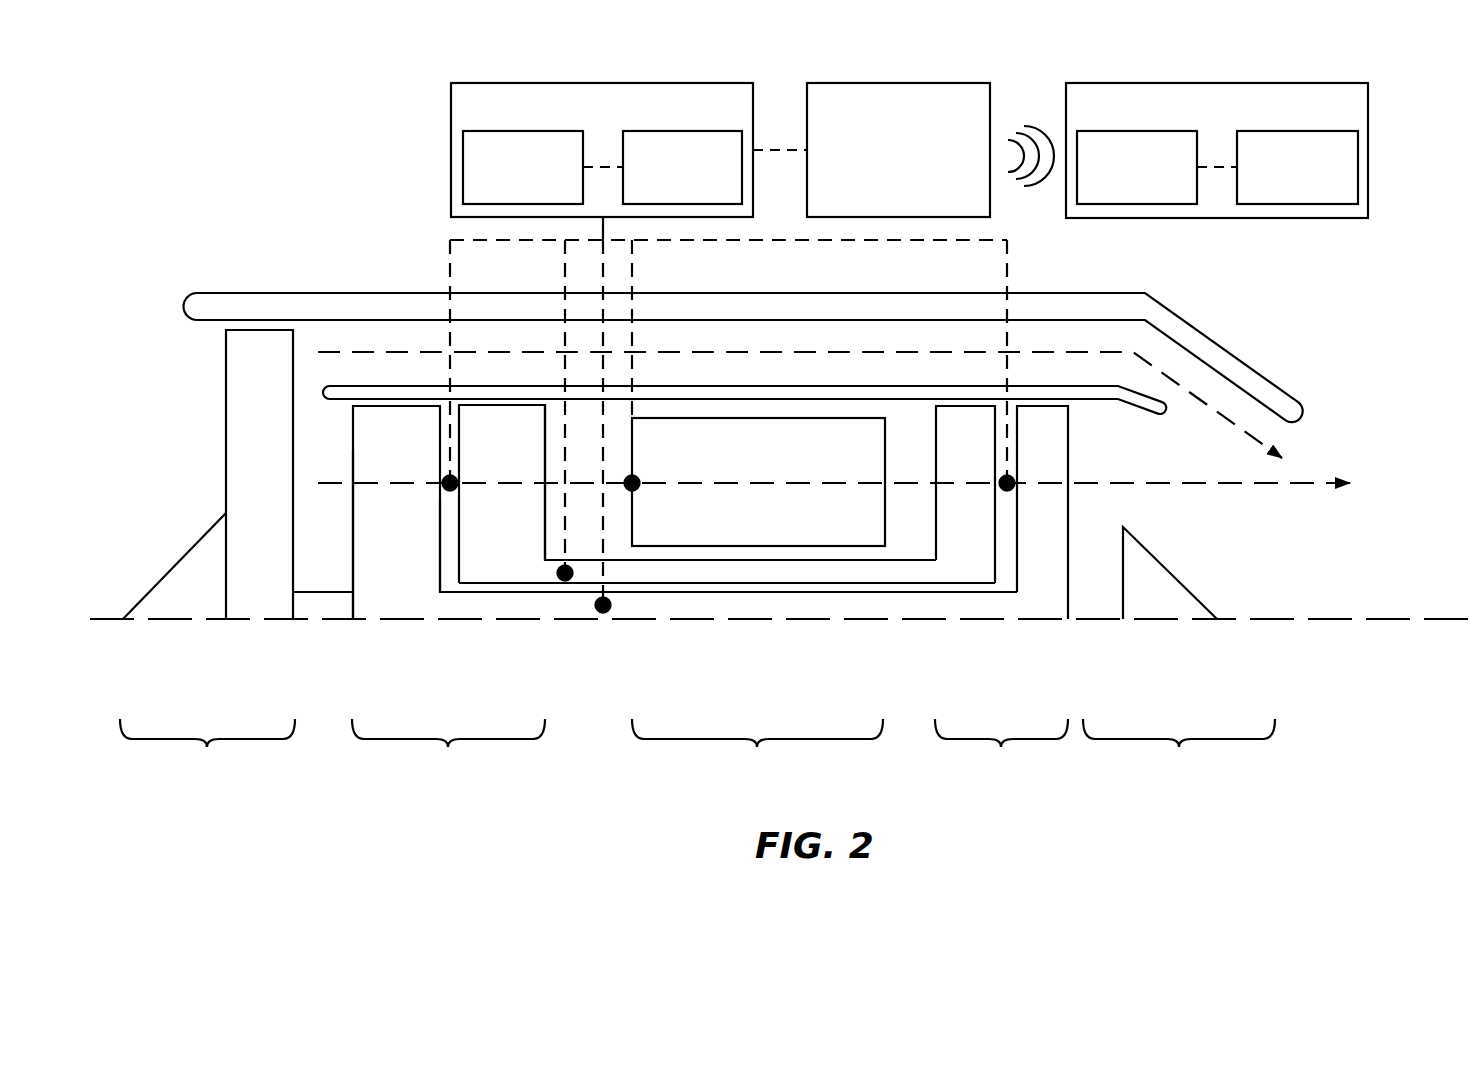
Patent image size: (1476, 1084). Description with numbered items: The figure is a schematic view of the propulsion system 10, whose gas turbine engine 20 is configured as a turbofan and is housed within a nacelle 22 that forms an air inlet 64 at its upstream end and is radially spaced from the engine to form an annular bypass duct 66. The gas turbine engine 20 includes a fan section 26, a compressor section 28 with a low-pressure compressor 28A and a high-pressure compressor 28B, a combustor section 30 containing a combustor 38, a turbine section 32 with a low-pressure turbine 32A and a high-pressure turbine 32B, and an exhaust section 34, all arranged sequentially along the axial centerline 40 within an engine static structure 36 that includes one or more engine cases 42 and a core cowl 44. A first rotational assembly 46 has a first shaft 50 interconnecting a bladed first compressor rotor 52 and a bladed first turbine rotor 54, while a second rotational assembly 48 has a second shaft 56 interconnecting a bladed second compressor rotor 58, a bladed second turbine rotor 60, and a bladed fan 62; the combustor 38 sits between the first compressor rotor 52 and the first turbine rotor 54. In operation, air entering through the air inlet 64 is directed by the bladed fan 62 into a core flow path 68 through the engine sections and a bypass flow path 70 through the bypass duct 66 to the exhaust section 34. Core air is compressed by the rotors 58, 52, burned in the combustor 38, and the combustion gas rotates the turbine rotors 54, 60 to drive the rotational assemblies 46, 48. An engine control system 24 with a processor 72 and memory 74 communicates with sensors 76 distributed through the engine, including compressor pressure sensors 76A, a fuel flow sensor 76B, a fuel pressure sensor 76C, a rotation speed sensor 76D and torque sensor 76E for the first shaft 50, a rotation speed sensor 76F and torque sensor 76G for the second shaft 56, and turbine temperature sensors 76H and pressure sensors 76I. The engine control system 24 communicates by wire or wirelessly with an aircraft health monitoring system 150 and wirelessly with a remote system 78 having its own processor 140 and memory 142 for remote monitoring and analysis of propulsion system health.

The propulsion system 10 is at (1308, 352).
The gas turbine engine 20 is at (182, 346).
The nacelle 22 is at (336, 272).
The engine control system 24 is at (451, 108).
The fan section 26 is at (207, 752).
The compressor section 28 is at (448, 752).
The low-pressure compressor 28A is at (392, 630).
The high-pressure compressor 28B is at (498, 563).
The combustor section 30 is at (757, 752).
The turbine section 32 is at (1001, 752).
The low-pressure turbine 32A is at (1038, 628).
The high-pressure turbine 32B is at (968, 563).
The exhaust section 34 is at (1179, 752).
The engine static structure 36 is at (1033, 372).
The combustor 38 is at (712, 538).
The axial centerline 40 is at (1444, 630).
The engine cases 42 is at (513, 397).
The core cowl 44 is at (553, 386).
The first rotational assembly 46 is at (450, 444).
The second rotational assembly 48 is at (348, 555).
The first shaft 50 is at (783, 572).
The bladed first compressor rotor 52 is at (508, 543).
The bladed first turbine rotor 54 is at (946, 510).
The second shaft 56 is at (452, 605).
The bladed second compressor rotor 58 is at (382, 510).
The bladed second turbine rotor 60 is at (1038, 510).
The bladed fan 62 is at (236, 489).
The air inlet 64 is at (175, 298).
The bypass duct 66 is at (370, 333).
The core flow path 68 is at (577, 483).
The bypass flow path 70 is at (323, 352).
The processor 72 is at (463, 152).
The memory 74 is at (712, 204).
The sensors 76 is at (430, 246).
The pressure sensors 76A is at (450, 491).
The fuel flow sensor 76B is at (719, 467).
The fuel pressure sensor 76C is at (634, 478).
The rotation speed sensor 76D is at (519, 542).
The torque sensor 76E is at (557, 573).
The rotation speed sensor 76F is at (618, 644).
The torque sensor 76G is at (604, 614).
The temperature sensors 76H is at (1092, 467).
The pressure sensors 76I is at (1010, 478).
The remote system 78 is at (1368, 110).
The processor 140 is at (1170, 204).
The memory 142 is at (1358, 167).
The health monitoring system 150 is at (915, 217).